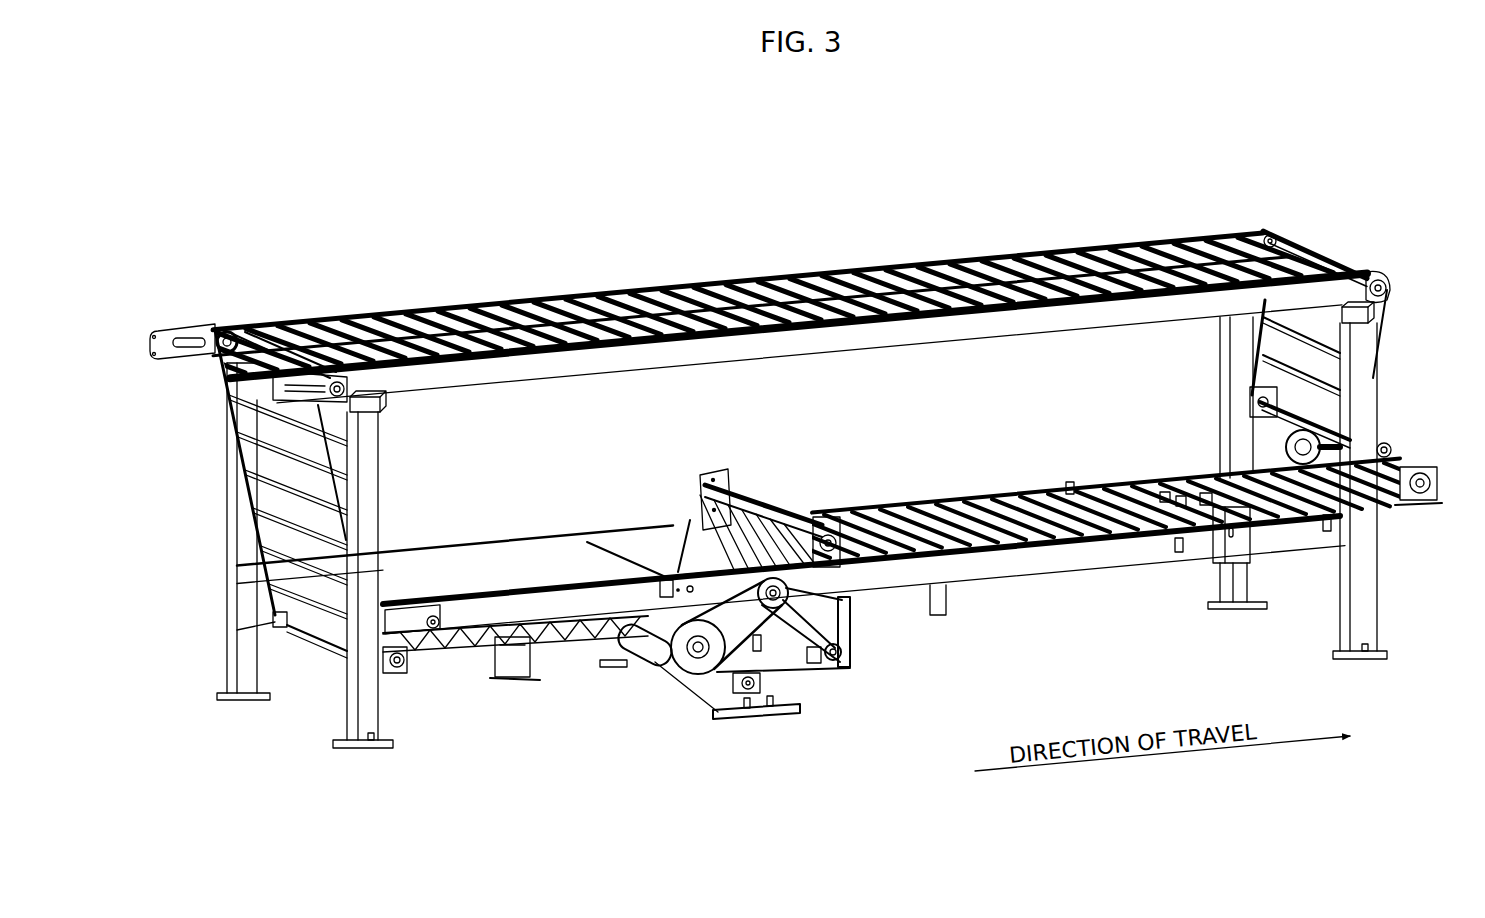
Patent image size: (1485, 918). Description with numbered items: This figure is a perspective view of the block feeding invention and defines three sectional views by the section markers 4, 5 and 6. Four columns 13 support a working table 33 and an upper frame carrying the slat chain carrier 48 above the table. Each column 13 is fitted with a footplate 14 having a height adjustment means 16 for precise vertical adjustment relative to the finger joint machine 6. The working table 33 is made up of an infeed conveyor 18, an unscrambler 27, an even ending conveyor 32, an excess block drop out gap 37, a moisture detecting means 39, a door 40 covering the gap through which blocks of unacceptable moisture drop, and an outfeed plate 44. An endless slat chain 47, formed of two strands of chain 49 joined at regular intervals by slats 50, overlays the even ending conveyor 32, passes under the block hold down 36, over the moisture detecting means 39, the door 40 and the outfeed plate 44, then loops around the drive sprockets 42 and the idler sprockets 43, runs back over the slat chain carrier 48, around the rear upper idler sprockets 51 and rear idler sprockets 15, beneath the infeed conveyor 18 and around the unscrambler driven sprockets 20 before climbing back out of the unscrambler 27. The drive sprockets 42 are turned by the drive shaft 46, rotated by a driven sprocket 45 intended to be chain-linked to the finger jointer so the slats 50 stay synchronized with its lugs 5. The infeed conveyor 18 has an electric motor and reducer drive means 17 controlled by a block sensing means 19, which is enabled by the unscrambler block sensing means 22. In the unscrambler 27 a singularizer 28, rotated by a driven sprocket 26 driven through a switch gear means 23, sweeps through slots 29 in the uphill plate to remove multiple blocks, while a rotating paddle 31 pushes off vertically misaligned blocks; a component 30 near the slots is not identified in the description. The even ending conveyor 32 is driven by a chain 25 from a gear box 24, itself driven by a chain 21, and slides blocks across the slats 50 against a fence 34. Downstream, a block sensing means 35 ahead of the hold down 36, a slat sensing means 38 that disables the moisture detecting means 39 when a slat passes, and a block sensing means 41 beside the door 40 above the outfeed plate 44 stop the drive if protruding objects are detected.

The column 13 is at (222, 664).
The footplate 14 is at (215, 698).
The rear idler sprockets 15 is at (283, 633).
The height adjustment means 16 is at (368, 750).
The electric motor and reducer drive means 17 is at (500, 673).
The infeed conveyor 18 is at (497, 584).
The block sensing means 19 is at (555, 534).
The unscrambler driven sprockets 20 is at (690, 672).
The chain 21 is at (705, 687).
The unscrambler block sensing means 22 is at (770, 668).
The switch gear means 23 is at (790, 630).
The gear box 24 is at (838, 660).
The chain 25 is at (853, 632).
The driven sprocket 26 is at (851, 615).
The unscrambler 27 is at (677, 559).
The singularizer 28 is at (692, 530).
The slots 29 is at (690, 497).
The mounting plate 30 is at (692, 480).
The rotating paddle means 31 is at (762, 486).
The even ending conveyor 32 is at (870, 530).
The working table 33 is at (1056, 566).
The fence 34 is at (1092, 546).
The block sensing means 35 is at (1070, 487).
The block hold down 36 is at (1200, 536).
The excess block drop out gap 37 is at (1165, 496).
The slat sensing means 38 is at (1182, 500).
The moisture detecting means 39 is at (1207, 500).
The door 40 is at (1228, 498).
The block sensing means 41 is at (1218, 450).
The drive sprockets 42 is at (1250, 410).
The idler sprockets 43 is at (1258, 232).
The outfeed plate 44 is at (1385, 515).
The driven sprocket 45 is at (1415, 506).
The drive shaft 46 is at (1338, 446).
The slat chain 47 is at (1320, 250).
The slat chain carrier 48 is at (1021, 339).
The chains 49 is at (630, 284).
The slats 50 is at (668, 290).
The rear upper idler sprockets 51 is at (213, 328).
The section line 4- 4 is at (212, 365).
The lug 5 is at (510, 470).
The finger joint machine 6 is at (1045, 428).